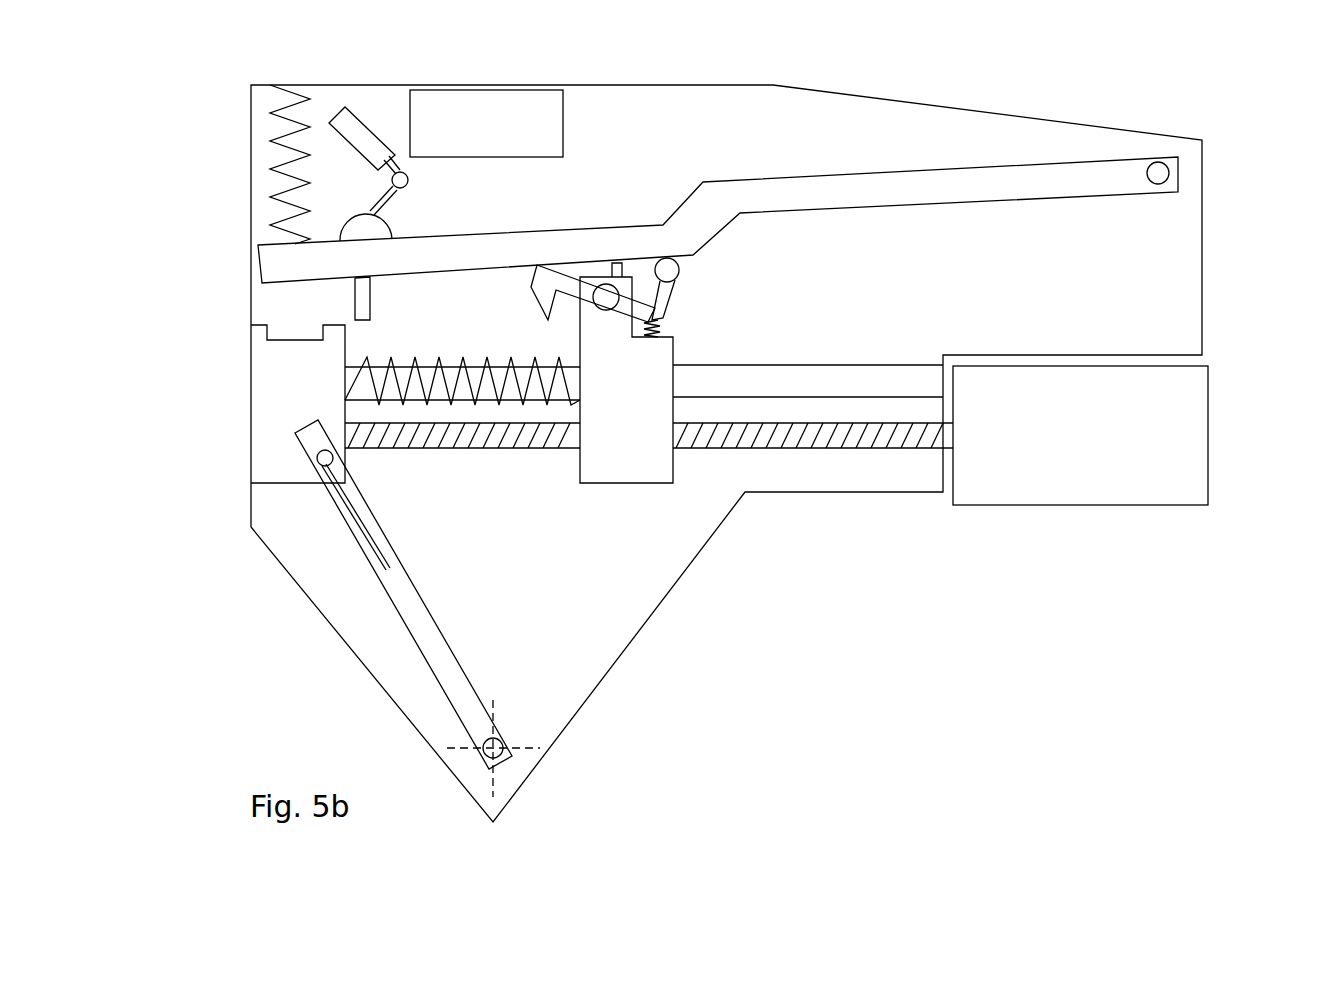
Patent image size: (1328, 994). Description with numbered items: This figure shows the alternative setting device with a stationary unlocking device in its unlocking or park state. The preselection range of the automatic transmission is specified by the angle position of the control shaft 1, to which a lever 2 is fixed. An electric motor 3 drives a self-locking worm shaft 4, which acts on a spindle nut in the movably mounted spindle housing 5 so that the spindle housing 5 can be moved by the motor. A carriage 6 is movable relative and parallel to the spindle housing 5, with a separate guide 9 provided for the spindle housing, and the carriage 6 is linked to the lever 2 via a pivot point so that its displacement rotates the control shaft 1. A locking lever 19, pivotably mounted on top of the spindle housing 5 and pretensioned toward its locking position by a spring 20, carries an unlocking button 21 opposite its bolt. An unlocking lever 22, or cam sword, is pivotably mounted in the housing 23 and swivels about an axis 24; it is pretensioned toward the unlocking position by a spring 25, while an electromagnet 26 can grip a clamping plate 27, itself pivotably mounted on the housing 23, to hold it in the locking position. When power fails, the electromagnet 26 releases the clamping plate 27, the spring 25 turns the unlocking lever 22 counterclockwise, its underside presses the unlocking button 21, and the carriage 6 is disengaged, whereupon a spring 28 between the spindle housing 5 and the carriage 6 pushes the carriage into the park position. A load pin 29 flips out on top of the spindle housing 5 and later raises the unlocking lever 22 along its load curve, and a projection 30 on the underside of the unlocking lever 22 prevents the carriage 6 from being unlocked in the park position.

The control shaft 1 is at (507, 750).
The lever 2 is at (417, 620).
The electric motor 3 is at (1053, 468).
The worm shaft 4 is at (793, 437).
The spindle housing 5 is at (622, 460).
The carriage 6 is at (266, 432).
The guide 9 is at (797, 377).
The locking lever 19 is at (663, 300).
The spring 20 is at (663, 324).
The unlocking button 21 is at (679, 270).
The unlocking lever 22 is at (953, 187).
The housing 23 is at (598, 683).
The axis 24 is at (1169, 174).
The spring 25 is at (271, 181).
The electromagnet 26 is at (486, 105).
The clamping plate 27 is at (340, 123).
The spring 28 is at (418, 360).
The load pin 29 is at (598, 264).
The projection 30 is at (355, 297).